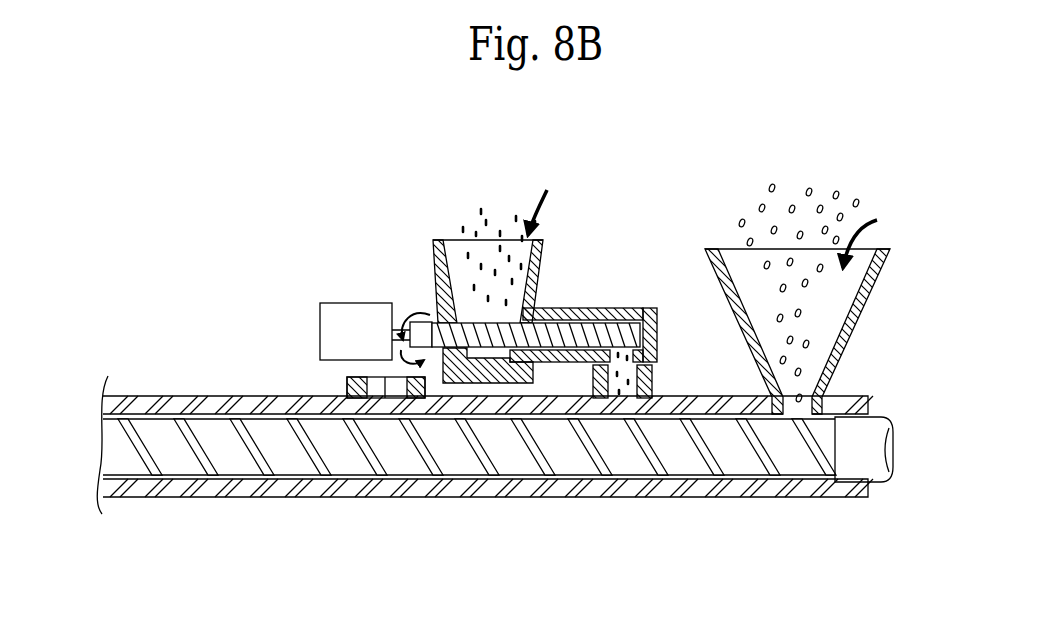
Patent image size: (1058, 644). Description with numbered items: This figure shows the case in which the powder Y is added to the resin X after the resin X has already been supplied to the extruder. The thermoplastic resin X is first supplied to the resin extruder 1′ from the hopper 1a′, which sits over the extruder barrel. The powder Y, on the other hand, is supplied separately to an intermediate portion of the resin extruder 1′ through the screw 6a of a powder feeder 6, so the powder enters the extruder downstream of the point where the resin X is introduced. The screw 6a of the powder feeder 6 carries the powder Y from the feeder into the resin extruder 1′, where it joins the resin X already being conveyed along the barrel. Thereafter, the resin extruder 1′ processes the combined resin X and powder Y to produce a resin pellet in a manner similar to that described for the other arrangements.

The resin extruder 1′ is at (525, 503).
The powder feeder 6 is at (421, 257).
The screw 6a is at (585, 333).
The hopper 1a′ is at (707, 272).
The thermoplastic resin X is at (832, 190).
The powder Y is at (488, 213).